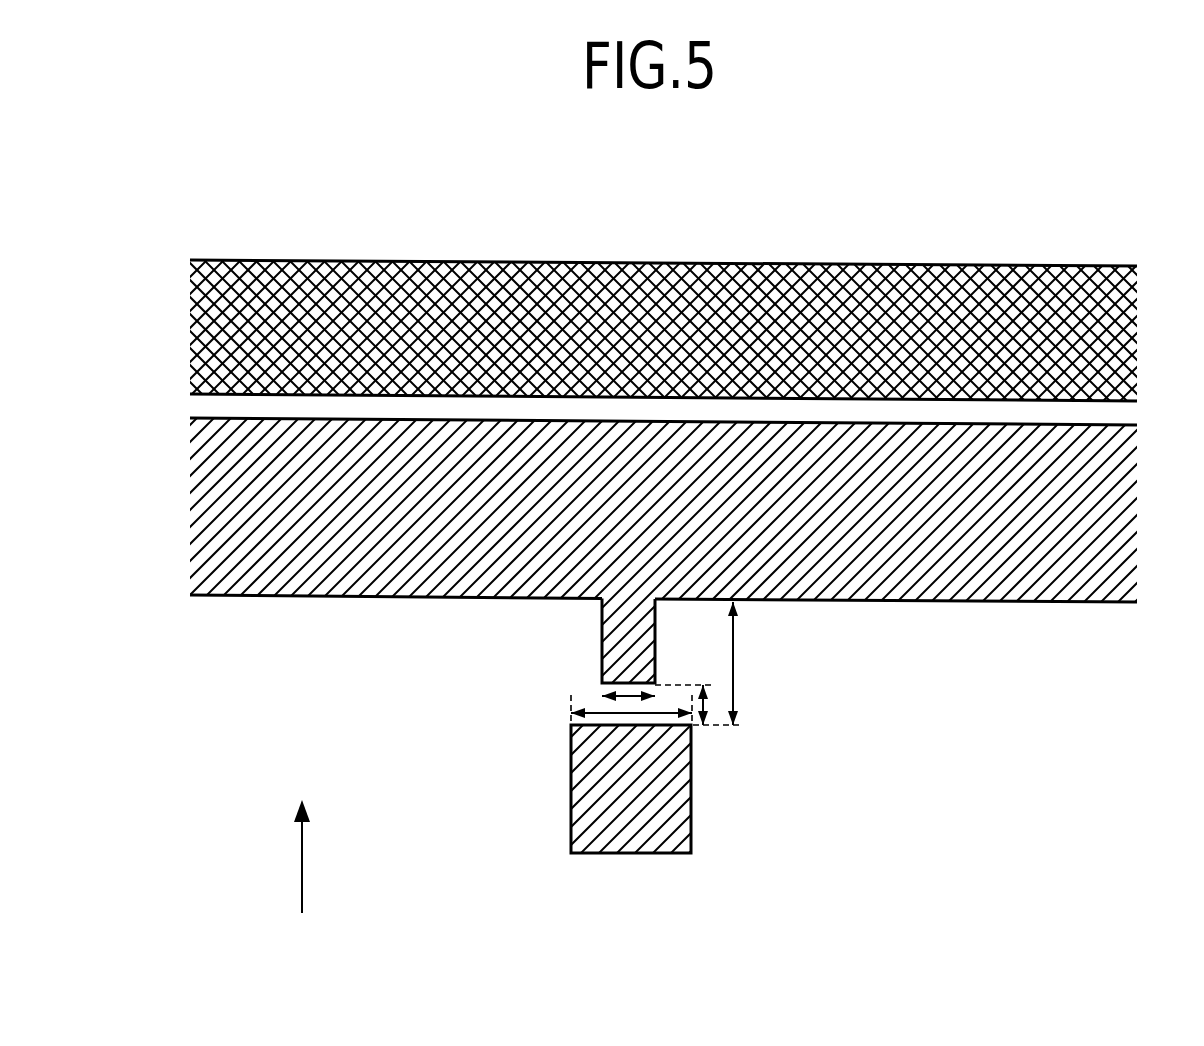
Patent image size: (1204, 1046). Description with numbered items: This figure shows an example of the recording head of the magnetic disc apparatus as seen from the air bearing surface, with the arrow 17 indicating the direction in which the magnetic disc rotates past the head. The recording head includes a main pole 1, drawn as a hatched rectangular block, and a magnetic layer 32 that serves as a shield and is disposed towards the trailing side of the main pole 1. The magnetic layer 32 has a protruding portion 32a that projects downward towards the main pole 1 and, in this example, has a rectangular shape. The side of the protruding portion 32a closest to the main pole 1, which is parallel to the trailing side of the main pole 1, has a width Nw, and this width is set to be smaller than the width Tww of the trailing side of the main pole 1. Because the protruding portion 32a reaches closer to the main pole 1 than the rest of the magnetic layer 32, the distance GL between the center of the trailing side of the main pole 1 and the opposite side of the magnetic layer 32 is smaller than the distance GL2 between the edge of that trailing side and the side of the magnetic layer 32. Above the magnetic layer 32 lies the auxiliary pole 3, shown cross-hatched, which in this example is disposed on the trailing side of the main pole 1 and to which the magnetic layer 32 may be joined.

The auxiliary pole 3 is at (525, 262).
The magnetic layer 32 is at (960, 601).
The protruding portion 32a is at (602, 637).
The main pole 1 is at (613, 835).
The arrow 17 is at (326, 856).
The width of protruding portion Nw is at (630, 696).
The width of main pole trailing side Tww is at (598, 738).
The distance between main pole center and magnetic layer GL is at (710, 702).
The distance between main pole edge and magnetic layer GL2 is at (768, 663).